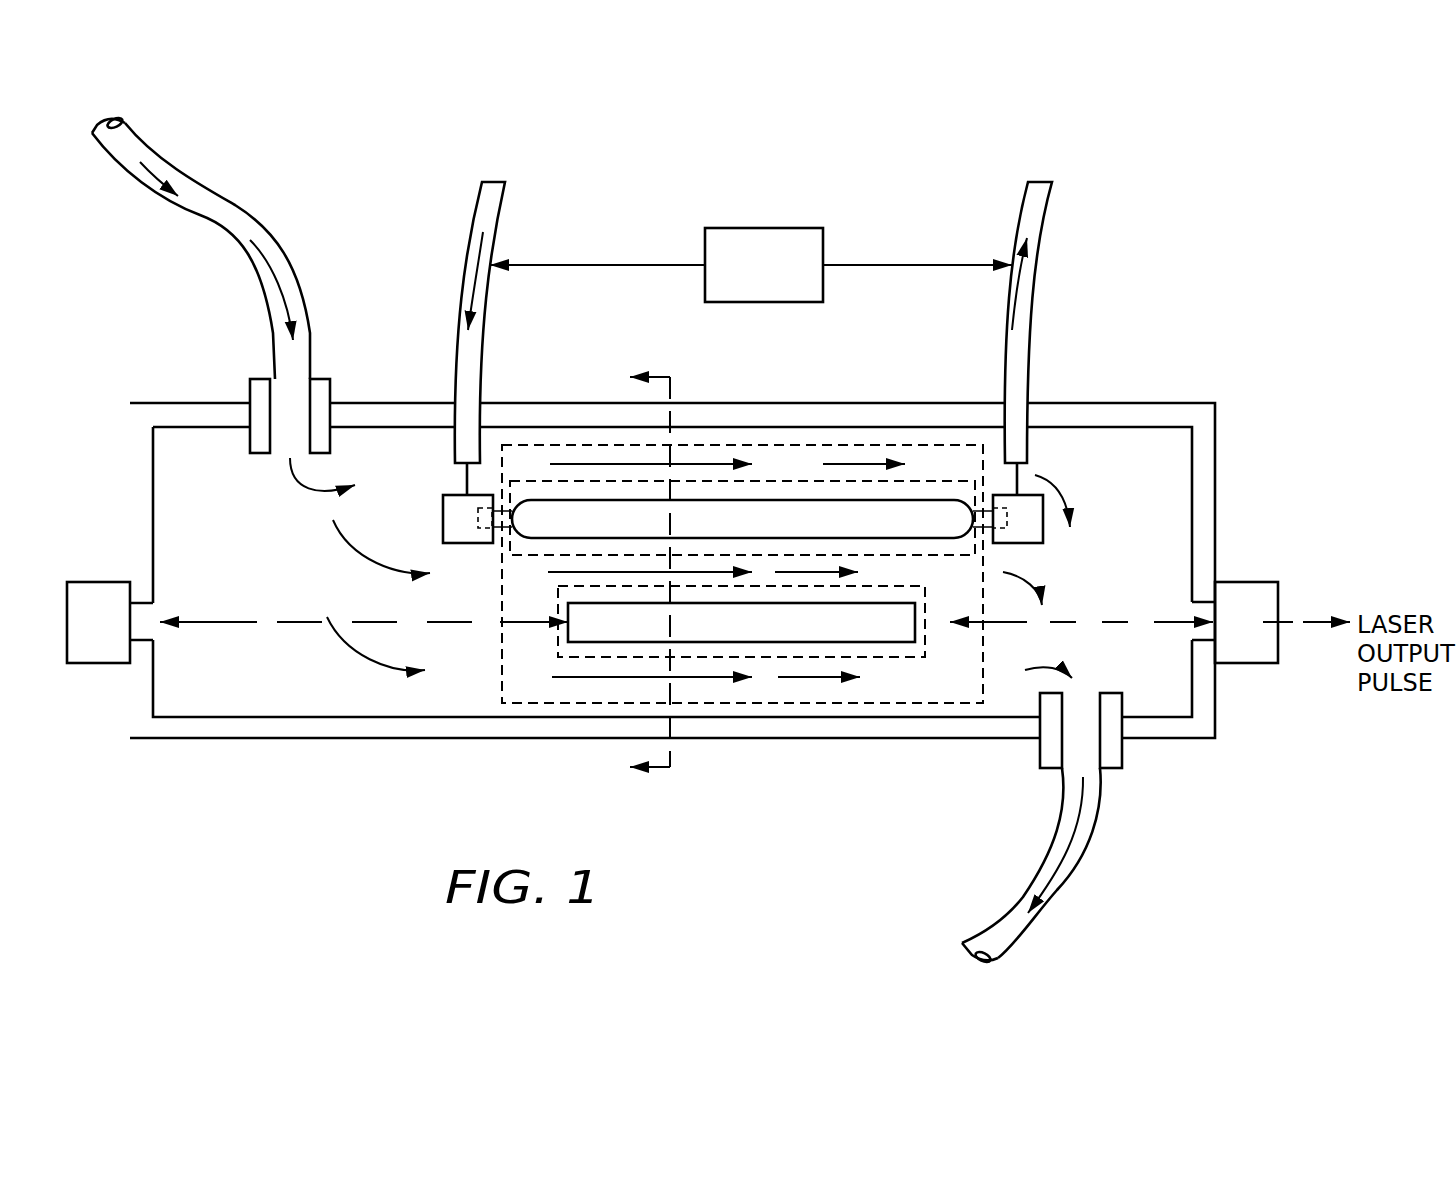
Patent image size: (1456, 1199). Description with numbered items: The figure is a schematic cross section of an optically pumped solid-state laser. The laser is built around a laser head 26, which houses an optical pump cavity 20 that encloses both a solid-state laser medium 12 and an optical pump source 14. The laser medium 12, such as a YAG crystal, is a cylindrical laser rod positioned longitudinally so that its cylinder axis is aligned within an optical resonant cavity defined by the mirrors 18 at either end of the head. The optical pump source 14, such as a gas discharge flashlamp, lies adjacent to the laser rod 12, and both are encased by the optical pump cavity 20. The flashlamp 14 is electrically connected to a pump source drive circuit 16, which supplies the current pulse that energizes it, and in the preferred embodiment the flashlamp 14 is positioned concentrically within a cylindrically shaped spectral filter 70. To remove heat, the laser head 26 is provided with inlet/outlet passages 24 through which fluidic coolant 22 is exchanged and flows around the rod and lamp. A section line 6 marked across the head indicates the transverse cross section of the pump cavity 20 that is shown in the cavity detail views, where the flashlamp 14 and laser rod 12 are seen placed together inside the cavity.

The section line 6- 6 is at (650, 574).
The solid-state laser medium 12 is at (890, 642).
The optical pump source 14 is at (866, 517).
The pump source drive circuit 16 is at (767, 228).
The mirrors 18 is at (83, 568).
The optical pump cavity 20 is at (477, 695).
The fluidic coolant 22 is at (273, 318).
The inlet/outlet passages 24 is at (207, 383).
The laser head 26 is at (1130, 378).
The spectral filter 70 is at (953, 481).